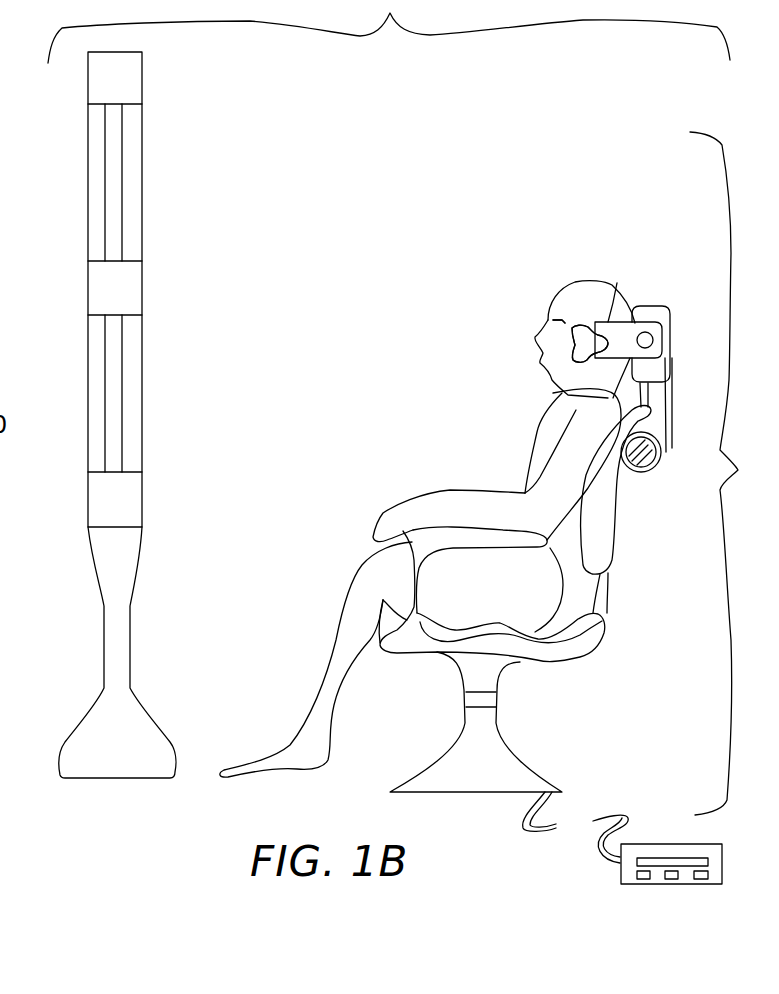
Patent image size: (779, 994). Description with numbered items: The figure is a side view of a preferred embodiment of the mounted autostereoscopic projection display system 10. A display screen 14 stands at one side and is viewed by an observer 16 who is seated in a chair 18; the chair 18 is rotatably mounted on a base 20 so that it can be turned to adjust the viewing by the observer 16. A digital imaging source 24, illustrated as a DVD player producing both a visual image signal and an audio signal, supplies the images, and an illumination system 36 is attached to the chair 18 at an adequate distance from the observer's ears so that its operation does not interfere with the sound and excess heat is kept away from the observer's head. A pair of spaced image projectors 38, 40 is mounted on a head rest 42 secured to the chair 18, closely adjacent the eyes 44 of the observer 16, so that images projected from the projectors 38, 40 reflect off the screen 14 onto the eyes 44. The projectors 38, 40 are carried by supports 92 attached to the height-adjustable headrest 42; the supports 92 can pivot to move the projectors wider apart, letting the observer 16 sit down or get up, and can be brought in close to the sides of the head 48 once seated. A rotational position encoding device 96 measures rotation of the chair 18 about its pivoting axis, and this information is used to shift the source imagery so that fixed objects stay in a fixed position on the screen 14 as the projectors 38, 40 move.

The display system 10 is at (413, 414).
The display screen 14 is at (143, 183).
The observer 16 is at (525, 452).
The chair 18 is at (535, 656).
The base 20 is at (444, 750).
The digital imaging source 24 is at (621, 872).
The illumination system 36 is at (643, 472).
The image projector 38 is at (557, 365).
The image projector 40 is at (590, 343).
The head rest 42 is at (657, 303).
The eyes 44 is at (558, 325).
The head 48 is at (592, 260).
The supports 92 is at (617, 283).
The rotational position encoding device 96 is at (478, 698).